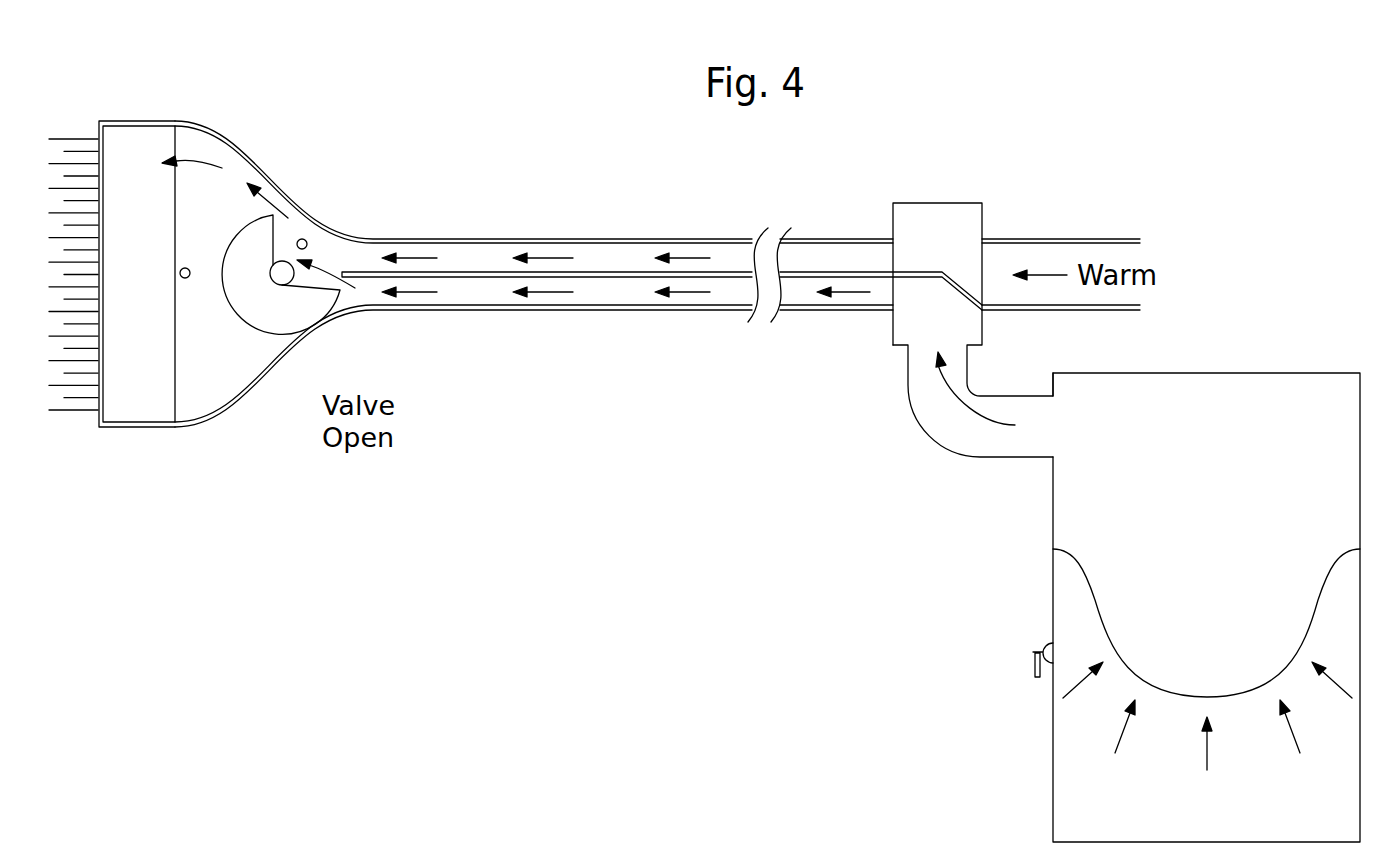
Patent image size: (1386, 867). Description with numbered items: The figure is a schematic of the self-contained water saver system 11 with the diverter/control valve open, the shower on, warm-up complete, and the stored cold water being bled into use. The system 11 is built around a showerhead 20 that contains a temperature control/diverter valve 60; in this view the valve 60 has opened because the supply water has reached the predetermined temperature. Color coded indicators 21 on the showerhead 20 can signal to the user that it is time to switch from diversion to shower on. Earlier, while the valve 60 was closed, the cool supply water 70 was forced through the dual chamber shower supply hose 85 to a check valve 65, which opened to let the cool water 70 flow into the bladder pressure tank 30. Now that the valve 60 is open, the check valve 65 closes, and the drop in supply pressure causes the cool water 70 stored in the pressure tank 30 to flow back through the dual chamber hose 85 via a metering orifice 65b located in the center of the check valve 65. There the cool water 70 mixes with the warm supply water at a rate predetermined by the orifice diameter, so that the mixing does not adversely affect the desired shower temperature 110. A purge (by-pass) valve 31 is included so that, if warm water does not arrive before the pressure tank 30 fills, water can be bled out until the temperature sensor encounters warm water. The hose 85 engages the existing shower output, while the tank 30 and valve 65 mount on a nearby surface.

The system 11 is at (1235, 244).
The showerhead 20 is at (130, 428).
The color coded indicators 21 is at (307, 240).
The bladder pressure tank 30 is at (1238, 373).
The purge (by-pass) valve 31 is at (1033, 652).
The temperature control/diverter valve 60 is at (268, 152).
The check valve 65 is at (869, 346).
The metering orifice 65b is at (914, 290).
The cool supply water 70 is at (475, 310).
The dual chamber shower supply hose 85 is at (582, 237).
The desired shower temperature 110 is at (80, 138).